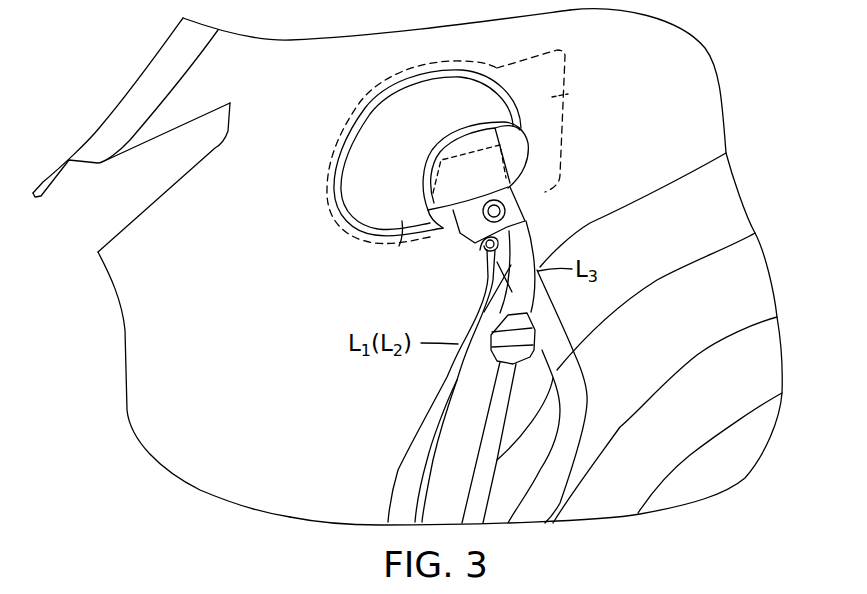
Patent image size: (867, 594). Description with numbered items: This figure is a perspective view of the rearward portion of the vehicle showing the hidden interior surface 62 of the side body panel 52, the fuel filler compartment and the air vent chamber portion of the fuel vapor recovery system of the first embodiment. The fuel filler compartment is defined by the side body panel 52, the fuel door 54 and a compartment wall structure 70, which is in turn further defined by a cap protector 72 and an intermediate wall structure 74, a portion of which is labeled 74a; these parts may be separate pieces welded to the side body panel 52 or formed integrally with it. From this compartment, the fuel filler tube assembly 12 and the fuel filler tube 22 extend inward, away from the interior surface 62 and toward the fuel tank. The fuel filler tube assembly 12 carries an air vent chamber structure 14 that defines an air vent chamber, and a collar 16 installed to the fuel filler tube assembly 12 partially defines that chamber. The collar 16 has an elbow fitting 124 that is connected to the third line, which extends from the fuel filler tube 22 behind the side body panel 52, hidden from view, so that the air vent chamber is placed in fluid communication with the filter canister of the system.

The fuel filler tube assembly 12 is at (556, 308).
The air vent chamber structure 14 is at (527, 199).
The collar 16 is at (468, 238).
The fuel filler tube 22 is at (568, 393).
The side body panel 52 is at (292, 75).
The fuel door 54 is at (575, 93).
The interior surface 62 is at (672, 60).
The compartment wall structure 70 is at (364, 175).
The cap protector 72 is at (436, 233).
The intermediate wall structure 74 is at (383, 212).
The engaging portion 74a is at (439, 231).
The elbow fitting 124 is at (506, 214).